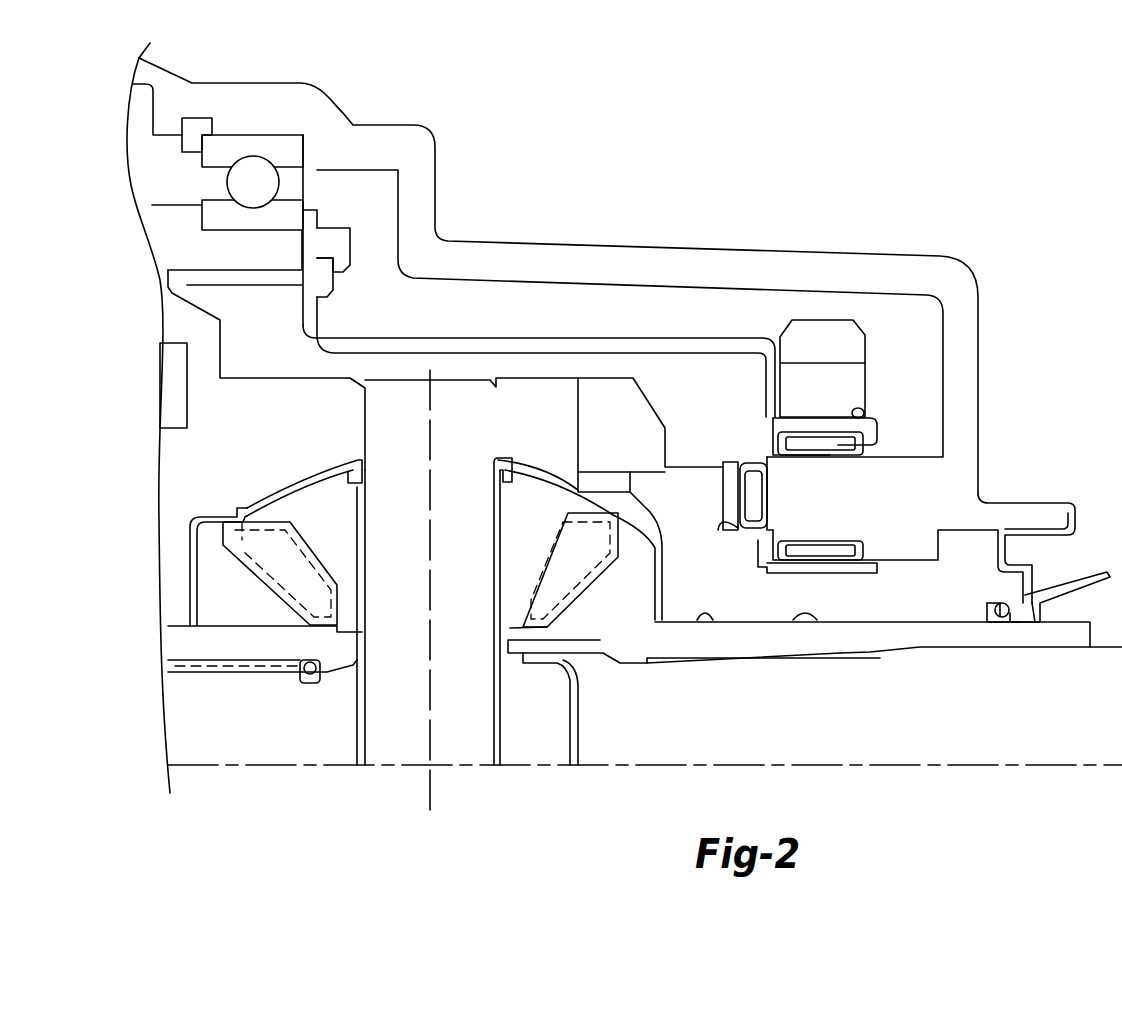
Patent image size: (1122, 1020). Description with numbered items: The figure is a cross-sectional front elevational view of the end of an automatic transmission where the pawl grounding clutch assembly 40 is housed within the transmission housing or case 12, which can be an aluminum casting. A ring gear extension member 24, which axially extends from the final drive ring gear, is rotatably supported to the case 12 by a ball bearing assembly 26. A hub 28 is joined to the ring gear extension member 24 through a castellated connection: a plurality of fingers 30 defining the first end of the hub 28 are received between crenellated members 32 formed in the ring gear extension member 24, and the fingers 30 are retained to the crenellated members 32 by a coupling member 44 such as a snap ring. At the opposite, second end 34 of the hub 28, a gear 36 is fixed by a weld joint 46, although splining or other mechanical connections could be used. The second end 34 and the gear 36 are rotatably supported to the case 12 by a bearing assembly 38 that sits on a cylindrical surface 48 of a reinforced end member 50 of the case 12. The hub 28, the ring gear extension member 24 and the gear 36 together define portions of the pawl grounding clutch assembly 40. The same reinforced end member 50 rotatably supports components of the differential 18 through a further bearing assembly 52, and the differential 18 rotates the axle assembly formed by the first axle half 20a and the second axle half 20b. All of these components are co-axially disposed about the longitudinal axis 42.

The transmission housing or case 12 is at (739, 266).
The differential 18 is at (662, 409).
The first axle half 20a is at (243, 747).
The second axle half 20b is at (890, 740).
The ring gear extension member 24 is at (237, 250).
The ball bearing assembly 26 is at (310, 222).
The hub 28 is at (569, 348).
The fingers 30 is at (267, 183).
The crenellated members 32 is at (342, 255).
The second end of the hub 34 is at (818, 432).
The gear 36 is at (865, 368).
The bearing assembly 38 is at (840, 447).
The pawl grounding clutch assembly 40 is at (898, 160).
The longitudinal axis 42 is at (1013, 763).
The coupling member 44 is at (327, 288).
The weld joint 46 is at (866, 414).
The cylindrical surface 48 is at (925, 460).
The reinforced end member 50 is at (905, 512).
The bearing assembly 52 is at (855, 560).